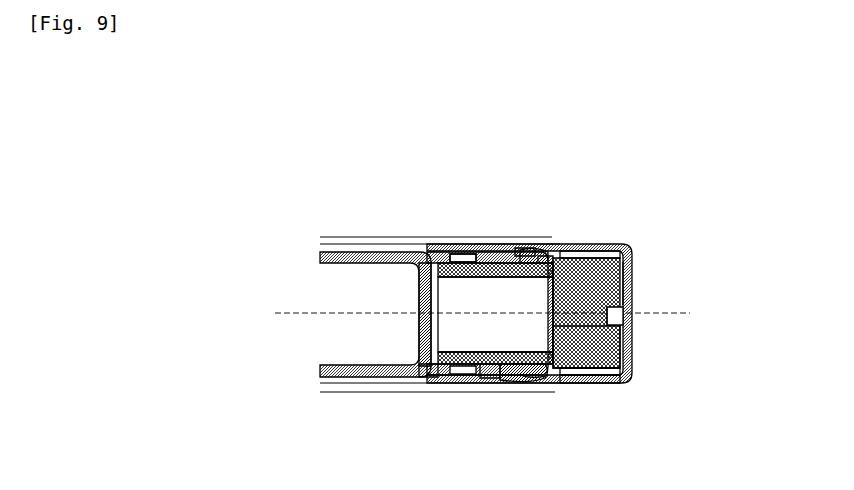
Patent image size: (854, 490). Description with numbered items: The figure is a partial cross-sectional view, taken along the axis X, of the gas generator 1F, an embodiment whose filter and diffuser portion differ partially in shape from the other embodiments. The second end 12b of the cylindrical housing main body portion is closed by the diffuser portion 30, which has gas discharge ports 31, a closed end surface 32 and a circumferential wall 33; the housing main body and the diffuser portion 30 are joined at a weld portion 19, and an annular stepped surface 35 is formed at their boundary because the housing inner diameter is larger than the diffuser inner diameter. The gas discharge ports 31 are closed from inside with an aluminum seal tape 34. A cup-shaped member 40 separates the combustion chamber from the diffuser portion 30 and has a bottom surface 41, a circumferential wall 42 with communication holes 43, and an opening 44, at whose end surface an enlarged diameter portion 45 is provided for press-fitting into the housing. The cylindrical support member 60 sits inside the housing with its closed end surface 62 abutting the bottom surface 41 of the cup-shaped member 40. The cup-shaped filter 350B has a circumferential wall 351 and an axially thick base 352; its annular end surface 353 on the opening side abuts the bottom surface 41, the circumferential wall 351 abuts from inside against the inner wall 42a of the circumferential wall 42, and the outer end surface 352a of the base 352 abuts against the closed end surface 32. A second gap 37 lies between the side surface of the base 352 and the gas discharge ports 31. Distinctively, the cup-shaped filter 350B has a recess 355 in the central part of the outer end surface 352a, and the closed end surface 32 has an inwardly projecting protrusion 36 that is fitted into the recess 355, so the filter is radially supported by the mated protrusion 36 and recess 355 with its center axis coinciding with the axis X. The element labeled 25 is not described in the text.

The gas generator 1F is at (428, 166).
The cylindrical support member 60 is at (340, 240).
The closed end surface 62 is at (419, 330).
The diffuser portion 30 is at (637, 238).
The second gap 37 is at (617, 248).
The outer end surface 352a is at (622, 364).
The cup-shaped member 40 is at (426, 246).
The holder opening 25 is at (449, 254).
The communication holes 43 is at (467, 263).
The circumferential wall 42 is at (483, 380).
The enlarged diameter portion 45 is at (510, 252).
The cup-shaped filter 350B is at (522, 250).
The weld portion 19 is at (539, 250).
The gas discharge ports 31 is at (583, 254).
The closed end surface 32 is at (625, 282).
The recess 355 is at (610, 309).
The axis X is at (607, 318).
The protrusion 36 is at (616, 318).
The base 352 is at (624, 333).
The circumferential wall 33 is at (607, 380).
The second end 12b is at (533, 380).
The annular stepped surface 35 is at (516, 384).
The circumferential wall 351 is at (497, 378).
The annular end surface 353 is at (425, 378).
The bottom surface 41 is at (440, 281).
The aluminum seal tape 34 is at (550, 350).
The inner wall 42a is at (490, 352).
The opening 44 is at (510, 364).